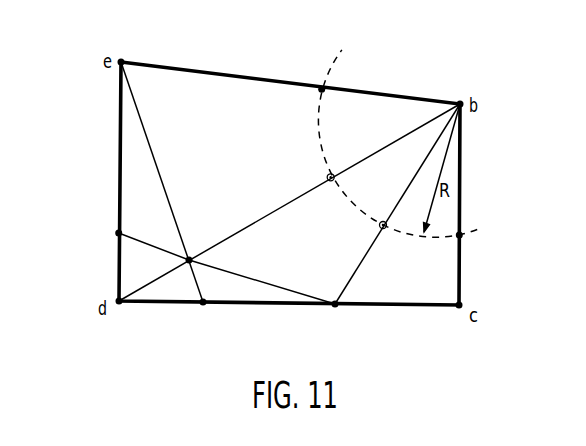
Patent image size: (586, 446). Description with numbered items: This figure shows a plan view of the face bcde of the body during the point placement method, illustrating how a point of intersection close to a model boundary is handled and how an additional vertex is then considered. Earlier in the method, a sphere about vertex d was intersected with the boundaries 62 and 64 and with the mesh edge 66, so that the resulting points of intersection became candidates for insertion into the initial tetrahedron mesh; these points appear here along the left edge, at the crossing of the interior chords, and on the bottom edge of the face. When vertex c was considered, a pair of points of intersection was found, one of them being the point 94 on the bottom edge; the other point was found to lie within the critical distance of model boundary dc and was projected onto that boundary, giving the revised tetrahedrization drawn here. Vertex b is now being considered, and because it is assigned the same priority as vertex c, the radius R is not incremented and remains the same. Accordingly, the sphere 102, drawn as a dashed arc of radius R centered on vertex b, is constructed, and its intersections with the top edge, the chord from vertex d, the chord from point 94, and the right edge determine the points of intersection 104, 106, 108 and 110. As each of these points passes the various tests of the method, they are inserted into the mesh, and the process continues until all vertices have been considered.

The boundary 62 is at (119, 233).
The boundary 64 is at (189, 260).
The mesh edge 66 is at (203, 302).
The point of intersection 94 is at (394, 219).
The sphere 102 is at (333, 64).
The point of intersection 104 is at (320, 92).
The point of intersection 106 is at (328, 177).
The point of intersection 108 is at (380, 227).
The point of intersection 110 is at (463, 232).